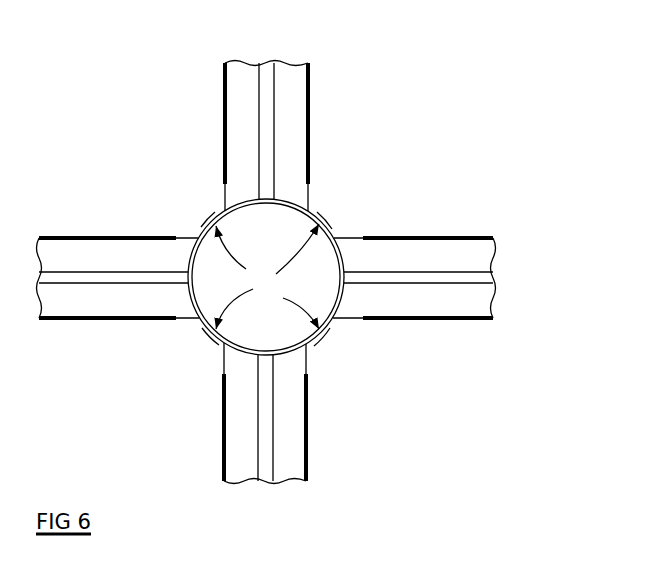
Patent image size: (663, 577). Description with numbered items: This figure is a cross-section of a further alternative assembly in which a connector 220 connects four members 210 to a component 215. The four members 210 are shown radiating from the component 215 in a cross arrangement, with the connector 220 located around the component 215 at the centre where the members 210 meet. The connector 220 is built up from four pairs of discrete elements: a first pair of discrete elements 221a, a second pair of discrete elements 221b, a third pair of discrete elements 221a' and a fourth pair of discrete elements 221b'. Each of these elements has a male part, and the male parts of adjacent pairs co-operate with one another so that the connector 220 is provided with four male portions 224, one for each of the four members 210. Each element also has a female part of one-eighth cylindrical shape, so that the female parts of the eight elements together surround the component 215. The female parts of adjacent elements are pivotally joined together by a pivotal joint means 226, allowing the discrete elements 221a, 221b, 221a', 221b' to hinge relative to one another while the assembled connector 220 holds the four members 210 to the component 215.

The member 210 is at (307, 79).
The male portion 224 is at (240, 100).
The connector 220 is at (274, 259).
The component 215 is at (235, 208).
The pivotal joint means 226 is at (267, 276).
The first pair of discrete elements 221a is at (177, 196).
The second pair of discrete elements 221b is at (366, 209).
The third pair of discrete elements 221a' is at (177, 348).
The fourth pair of discrete elements 221b' is at (363, 351).